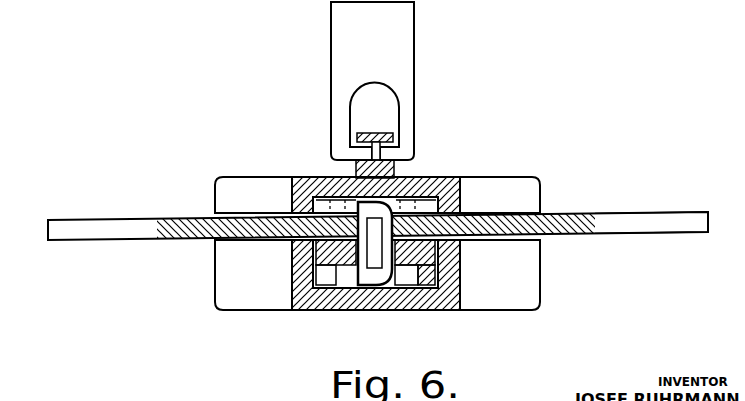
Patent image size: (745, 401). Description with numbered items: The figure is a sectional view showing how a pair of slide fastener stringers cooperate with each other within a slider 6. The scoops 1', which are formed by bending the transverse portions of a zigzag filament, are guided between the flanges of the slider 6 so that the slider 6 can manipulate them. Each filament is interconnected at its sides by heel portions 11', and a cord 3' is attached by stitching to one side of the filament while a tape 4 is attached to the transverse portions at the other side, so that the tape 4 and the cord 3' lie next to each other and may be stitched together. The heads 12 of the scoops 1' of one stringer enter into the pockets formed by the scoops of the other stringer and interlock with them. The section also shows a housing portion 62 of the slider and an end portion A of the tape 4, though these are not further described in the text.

The T-bolt housing 62 is at (402, 38).
The scoops 1' is at (386, 177).
The tape 4 is at (143, 226).
The slider 6 is at (515, 180).
The blade end portion A is at (627, 218).
The inner longitudinal heel portions 11' is at (365, 300).
The cord 3' is at (314, 297).
The head portions 12 is at (382, 305).